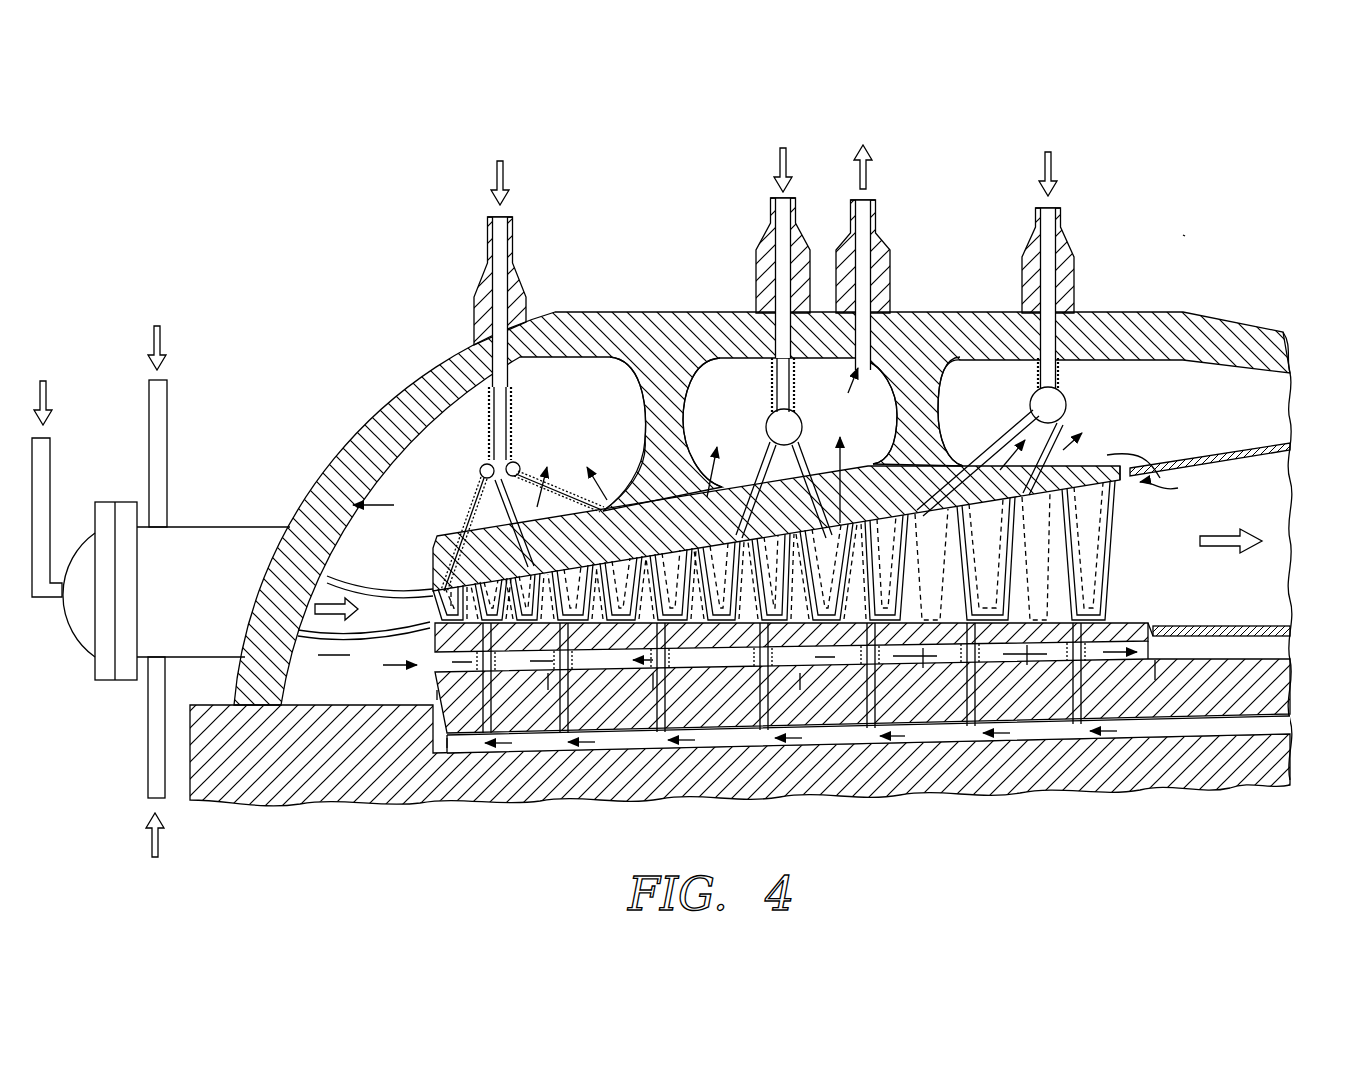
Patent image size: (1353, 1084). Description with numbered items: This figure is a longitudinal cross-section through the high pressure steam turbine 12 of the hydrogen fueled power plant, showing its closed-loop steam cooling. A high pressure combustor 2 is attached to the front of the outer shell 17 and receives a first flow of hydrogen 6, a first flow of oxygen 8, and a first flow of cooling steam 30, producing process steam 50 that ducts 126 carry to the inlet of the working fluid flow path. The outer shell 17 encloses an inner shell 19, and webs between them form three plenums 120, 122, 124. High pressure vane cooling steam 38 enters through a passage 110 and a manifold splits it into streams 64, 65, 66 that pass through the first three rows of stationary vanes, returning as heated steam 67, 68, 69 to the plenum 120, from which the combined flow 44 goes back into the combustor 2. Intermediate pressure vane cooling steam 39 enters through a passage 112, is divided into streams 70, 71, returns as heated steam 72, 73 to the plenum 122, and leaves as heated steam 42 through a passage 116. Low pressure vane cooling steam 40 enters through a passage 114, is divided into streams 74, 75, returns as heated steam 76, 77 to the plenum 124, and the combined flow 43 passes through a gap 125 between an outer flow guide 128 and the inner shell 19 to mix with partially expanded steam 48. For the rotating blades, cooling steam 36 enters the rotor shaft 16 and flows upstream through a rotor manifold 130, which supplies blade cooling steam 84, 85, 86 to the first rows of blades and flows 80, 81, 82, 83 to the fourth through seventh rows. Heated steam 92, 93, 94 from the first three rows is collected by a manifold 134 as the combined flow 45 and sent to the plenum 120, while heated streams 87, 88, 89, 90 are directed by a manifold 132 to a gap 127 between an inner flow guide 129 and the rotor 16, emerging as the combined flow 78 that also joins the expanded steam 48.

The high pressure combustor 2 is at (198, 527).
The first flow of hydrogen 6 is at (46, 392).
The first flow of oxygen 8 is at (162, 338).
The high pressure steam turbine 12 is at (1185, 235).
The rotor shaft 16 is at (1232, 782).
The outer shell 17 is at (1208, 318).
The inner shell 19 is at (437, 540).
The first flow of cooling steam 30 is at (152, 832).
The rotor cooling steam 36 is at (1345, 722).
The high pressure vane cooling steam 38 is at (503, 182).
The intermediate pressure vane cooling steam 39 is at (780, 172).
The low pressure vane cooling steam 40 is at (1051, 177).
The heated cooling steam 42 is at (866, 180).
The combined flow of heated cooling steam 43 is at (1160, 479).
The combined flow of heated cooling steam 44 is at (380, 507).
The combined flow of heated cooling steam 45 is at (415, 668).
The partially expanded steam 48 is at (1222, 540).
The first flow of process steam 50 is at (355, 645).
The cooling steam stream 64 is at (480, 467).
The cooling steam stream 65 is at (514, 461).
The cooling steam stream 66 is at (518, 470).
The heated steam 67 is at (444, 486).
The heated steam 68 is at (550, 468).
The heated steam 69 is at (590, 478).
The cooling steam stream 70 is at (768, 415).
The cooling steam stream 71 is at (800, 412).
The heated steam 72 is at (712, 460).
The heated steam 73 is at (842, 465).
The cooling steam stream 74 is at (1030, 400).
The cooling steam stream 75 is at (1064, 403).
The heated cooling steam 76 is at (1003, 445).
The heated cooling steam 77 is at (1075, 440).
The combined flow of heated cooling steam 78 is at (1150, 650).
The cooling steam flow 80 is at (1125, 655).
The cooling steam flow 81 is at (1005, 710).
The cooling steam flow 82 is at (895, 735).
The cooling steam flow 83 is at (785, 720).
The cooling steam 84 is at (690, 745).
The cooling steam 85 is at (590, 748).
The cooling passage 86 is at (508, 748).
The heated cooling steam stream 87 is at (800, 753).
The heated cooling steam stream 88 is at (923, 655).
The heated cooling steam stream 89 is at (1025, 652).
The heated cooling steam stream 90 is at (1123, 660).
The heated cooling steam 92 is at (653, 720).
The heated cooling steam 93 is at (548, 720).
The heated cooling steam 94 is at (445, 735).
The passage 110 is at (500, 280).
The passage 112 is at (783, 282).
The passage 114 is at (1050, 275).
The passage 116 is at (863, 285).
The plenum 120 is at (612, 390).
The plenum 122 is at (890, 420).
The plenum 124 is at (1240, 408).
The gap 125 is at (1135, 472).
The ducts 126 is at (312, 640).
The gap 127 is at (1153, 637).
The outer flow guide 128 is at (1283, 440).
The inner flow guide 129 is at (1275, 626).
The rotor manifold 130 is at (1285, 682).
The manifold 132 is at (1127, 663).
The manifold 134 is at (435, 718).